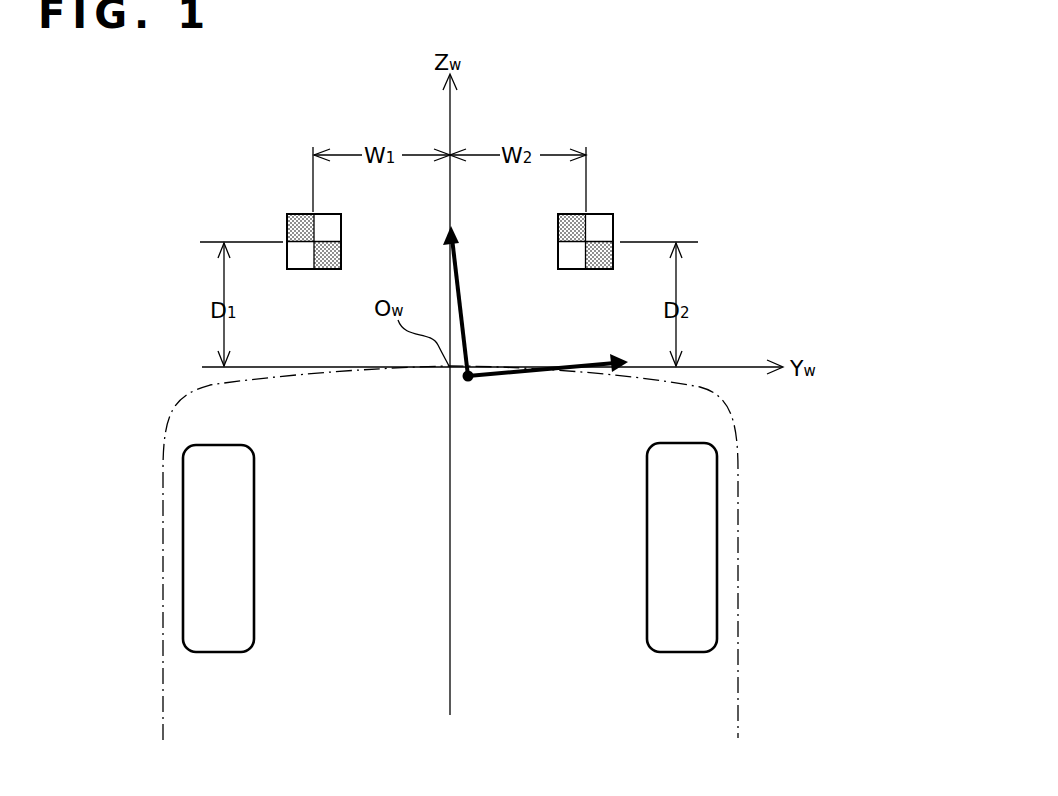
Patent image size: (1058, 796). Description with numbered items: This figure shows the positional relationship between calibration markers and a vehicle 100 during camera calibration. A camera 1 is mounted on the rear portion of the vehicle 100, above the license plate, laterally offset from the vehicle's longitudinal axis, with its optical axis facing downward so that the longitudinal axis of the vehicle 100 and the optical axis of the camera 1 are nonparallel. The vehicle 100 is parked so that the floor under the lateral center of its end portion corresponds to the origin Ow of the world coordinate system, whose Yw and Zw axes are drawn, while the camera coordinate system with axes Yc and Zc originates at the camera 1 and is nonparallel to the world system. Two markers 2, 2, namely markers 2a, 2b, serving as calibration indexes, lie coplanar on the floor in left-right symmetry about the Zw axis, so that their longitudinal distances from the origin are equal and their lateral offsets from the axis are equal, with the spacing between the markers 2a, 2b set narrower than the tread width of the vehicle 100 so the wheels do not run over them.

The camera 1 is at (470, 372).
The marker 2 is at (440, 204).
The marker 2a is at (290, 216).
The marker 2b is at (606, 218).
The vehicle 100 is at (738, 608).